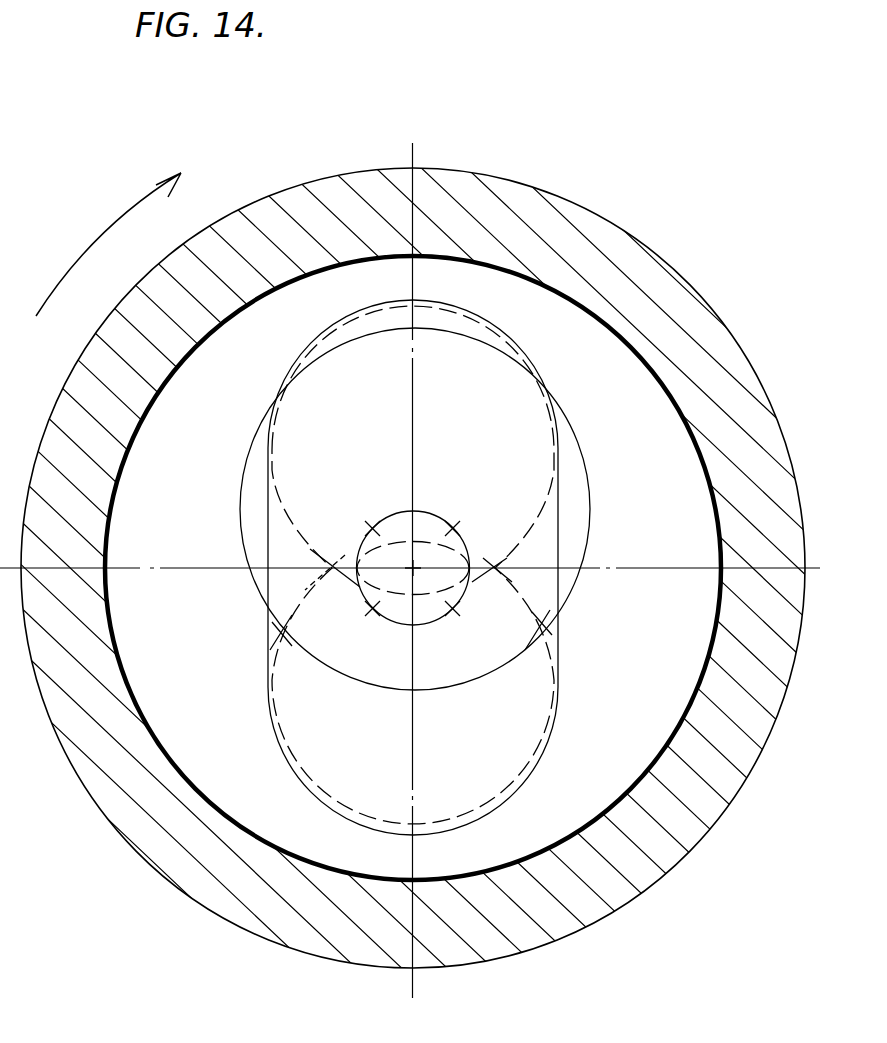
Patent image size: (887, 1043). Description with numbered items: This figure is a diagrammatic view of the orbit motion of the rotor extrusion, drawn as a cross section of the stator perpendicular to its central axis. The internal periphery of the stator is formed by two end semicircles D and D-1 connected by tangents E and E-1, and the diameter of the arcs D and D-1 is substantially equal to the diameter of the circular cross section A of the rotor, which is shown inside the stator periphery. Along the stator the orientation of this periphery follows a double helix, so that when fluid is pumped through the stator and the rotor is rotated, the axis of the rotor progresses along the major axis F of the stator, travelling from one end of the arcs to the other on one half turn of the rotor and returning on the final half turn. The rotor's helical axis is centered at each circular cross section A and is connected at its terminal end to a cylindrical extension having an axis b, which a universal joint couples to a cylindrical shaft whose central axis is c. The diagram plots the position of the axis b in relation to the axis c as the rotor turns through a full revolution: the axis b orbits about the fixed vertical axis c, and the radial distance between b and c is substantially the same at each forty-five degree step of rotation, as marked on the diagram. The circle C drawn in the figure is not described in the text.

The major axis of the stator F is at (407, 275).
The end semicircle D is at (418, 297).
The end semicircle D-1 is at (420, 836).
The circular cross section of the rotor A is at (276, 494).
The circle C (rotor sweep circle) C is at (237, 478).
The tangent E is at (267, 553).
The tangent E-1 is at (560, 552).
The axis of the cylindrical extension b is at (373, 528).
The central axis of the cylindrical shaft c is at (413, 568).